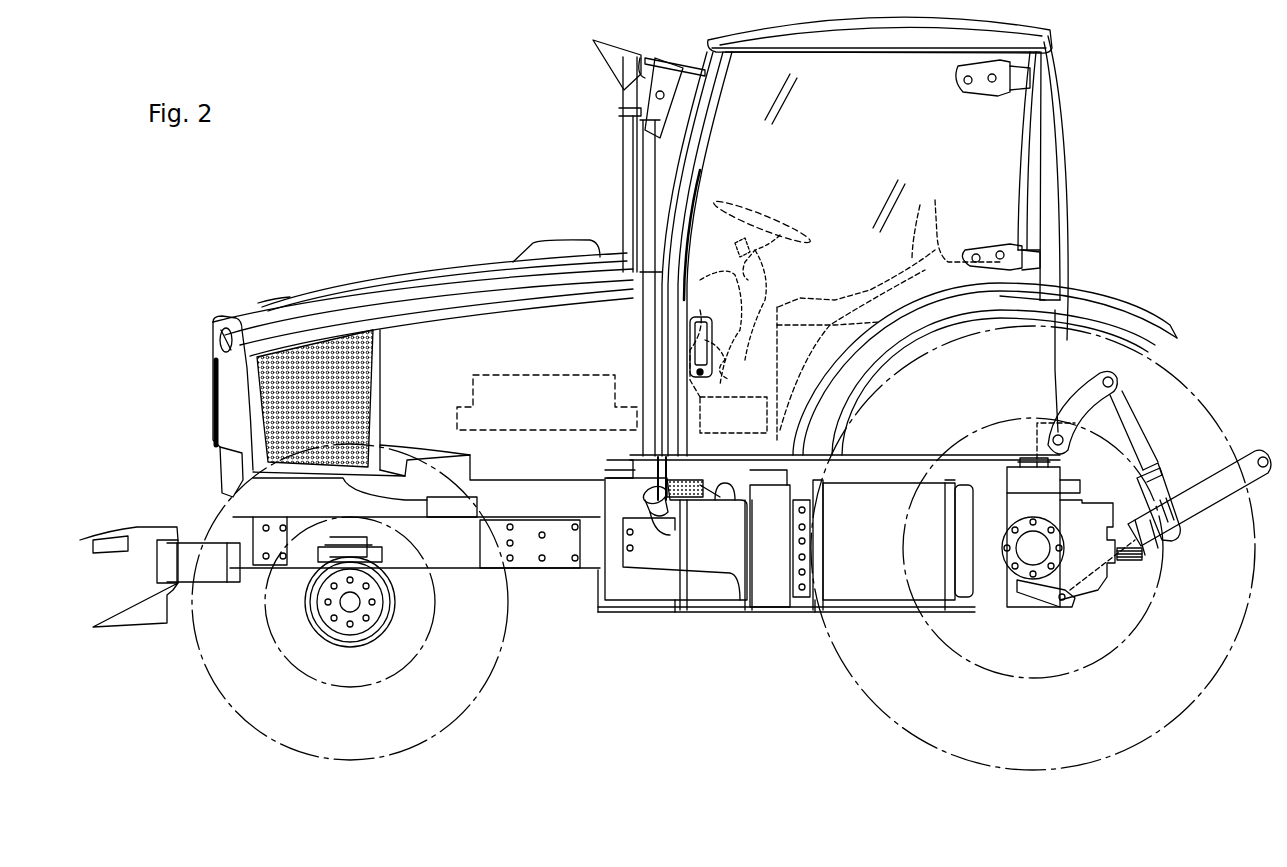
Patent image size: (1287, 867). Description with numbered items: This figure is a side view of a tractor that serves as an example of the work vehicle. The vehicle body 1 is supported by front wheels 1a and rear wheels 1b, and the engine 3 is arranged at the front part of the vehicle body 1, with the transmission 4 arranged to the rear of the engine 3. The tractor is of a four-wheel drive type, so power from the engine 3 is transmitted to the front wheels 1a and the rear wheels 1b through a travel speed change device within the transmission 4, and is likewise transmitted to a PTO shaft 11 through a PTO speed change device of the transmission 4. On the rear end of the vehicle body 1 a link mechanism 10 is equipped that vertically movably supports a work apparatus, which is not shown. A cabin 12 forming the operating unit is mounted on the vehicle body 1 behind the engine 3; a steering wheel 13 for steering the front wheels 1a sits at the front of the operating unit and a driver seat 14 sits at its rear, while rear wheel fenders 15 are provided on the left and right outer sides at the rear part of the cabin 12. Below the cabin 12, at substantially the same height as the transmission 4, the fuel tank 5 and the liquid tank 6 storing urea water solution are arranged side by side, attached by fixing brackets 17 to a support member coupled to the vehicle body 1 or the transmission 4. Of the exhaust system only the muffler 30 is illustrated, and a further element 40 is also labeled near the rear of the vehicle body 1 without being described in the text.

The vehicle body 1 is at (560, 612).
The front wheels 1a is at (210, 685).
The rear wheels 1b is at (1195, 702).
The engine 3 is at (488, 372).
The transmission 4 is at (713, 473).
The fuel tank 5 is at (630, 588).
The liquid tank (urea tank) 6 is at (773, 586).
The link mechanism 10 is at (1186, 432).
The PTO shaft 11 is at (1130, 562).
The cabin 12 is at (1082, 102).
The steering wheel 13 is at (768, 222).
The driver seat 14 is at (932, 240).
The rear wheel fenders 15 is at (1125, 292).
The fixing brackets 17 is at (950, 522).
The muffler 30 is at (623, 162).
The rear axle case 40 is at (1010, 485).